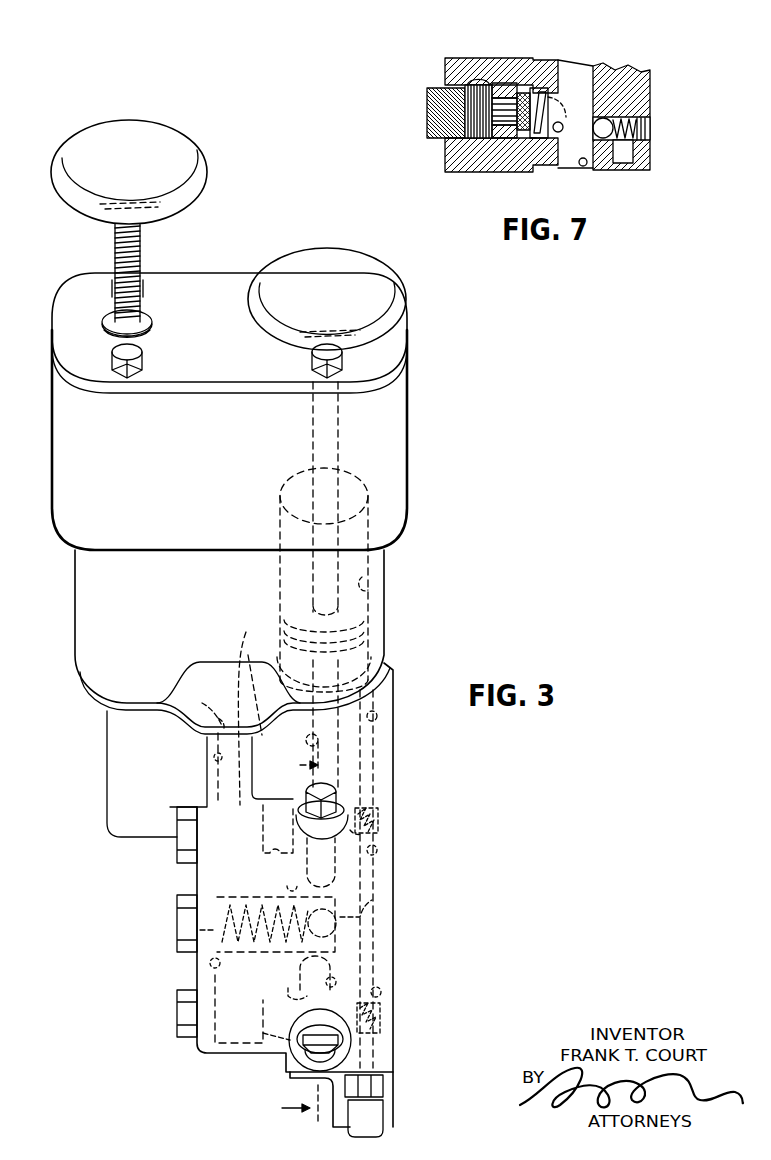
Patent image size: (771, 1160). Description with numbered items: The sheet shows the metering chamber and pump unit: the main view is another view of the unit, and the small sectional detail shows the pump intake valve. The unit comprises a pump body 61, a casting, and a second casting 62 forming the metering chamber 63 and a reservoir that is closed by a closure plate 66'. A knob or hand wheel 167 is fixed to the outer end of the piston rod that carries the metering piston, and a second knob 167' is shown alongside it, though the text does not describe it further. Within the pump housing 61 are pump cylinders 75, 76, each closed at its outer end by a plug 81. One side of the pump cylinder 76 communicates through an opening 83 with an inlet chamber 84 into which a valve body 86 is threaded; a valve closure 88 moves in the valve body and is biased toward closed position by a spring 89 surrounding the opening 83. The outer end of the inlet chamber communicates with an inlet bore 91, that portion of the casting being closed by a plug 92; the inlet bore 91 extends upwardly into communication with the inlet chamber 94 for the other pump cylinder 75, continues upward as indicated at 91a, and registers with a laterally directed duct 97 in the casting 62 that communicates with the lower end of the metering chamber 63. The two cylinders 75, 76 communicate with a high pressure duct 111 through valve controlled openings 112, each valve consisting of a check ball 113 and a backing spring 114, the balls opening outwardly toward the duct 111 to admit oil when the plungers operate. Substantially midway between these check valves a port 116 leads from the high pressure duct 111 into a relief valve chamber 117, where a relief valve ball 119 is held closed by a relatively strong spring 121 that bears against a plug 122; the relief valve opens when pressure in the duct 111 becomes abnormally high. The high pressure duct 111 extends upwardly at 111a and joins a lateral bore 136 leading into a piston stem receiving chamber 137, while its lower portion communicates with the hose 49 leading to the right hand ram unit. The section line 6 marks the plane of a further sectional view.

In FIG. 3, the adjusting knob 167' is at (141, 168).
In FIG. 3, the closure plate 66' is at (229, 394).
In FIG. 3, the knob or hand wheel 167 is at (342, 299).
In FIG. 3, the metering chamber casting 62 is at (393, 554).
In FIG. 3, the metering chamber 63 is at (372, 583).
In FIG. 3, the laterally directed duct 97 is at (264, 637).
In FIG. 3, the lateral bore 136 is at (381, 660).
In FIG. 3, the inlet bore continuation 91a is at (198, 707).
In FIG. 3, the high pressure duct extension 111a is at (378, 716).
In FIG. 3, the piston stem receiving chamber 137 is at (305, 740).
In FIG. 3, the plug 81 is at (324, 788).
In FIG. 3, the section line 6 is at (299, 936).
In FIG. 3, the inlet bore 91 is at (213, 757).
In FIG. 7, the inlet bore 91 is at (478, 80).
In FIG. 3, the check ball 113 is at (364, 810).
In FIG. 3, the backing spring 114 is at (360, 820).
In FIG. 3, the valve controlled opening 112 is at (386, 826).
In FIG. 3, the high pressure duct 111 is at (378, 850).
In FIG. 7, the high pressure duct 111 is at (630, 156).
In FIG. 3, the plug 92 is at (182, 848).
In FIG. 7, the plug 92 is at (427, 125).
In FIG. 3, the pump cylinder 75 is at (335, 866).
In FIG. 3, the inlet chamber 94 is at (271, 860).
In FIG. 3, the relief valve chamber 117 is at (294, 893).
In FIG. 3, the port 116 is at (372, 900).
In FIG. 3, the plug 122 is at (180, 915).
In FIG. 3, the spring 121 is at (200, 934).
In FIG. 3, the relief valve ball 119 is at (300, 948).
In FIG. 3, the opening 83 is at (303, 978).
In FIG. 7, the opening 83 is at (560, 132).
In FIG. 3, the pump cylinder 76 is at (337, 985).
In FIG. 7, the pump cylinder 76 is at (589, 166).
In FIG. 3, the pump body 61 is at (196, 1059).
In FIG. 7, the pump body 61 is at (445, 160).
In FIG. 3, the inlet chamber 84 is at (270, 1035).
In FIG. 7, the inlet chamber 84 is at (533, 140).
In FIG. 3, the hose 49 is at (372, 1113).
In FIG. 7, the valve body 86 is at (507, 95).
In FIG. 7, the valve closure 88 is at (538, 90).
In FIG. 7, the spring 89 is at (567, 104).